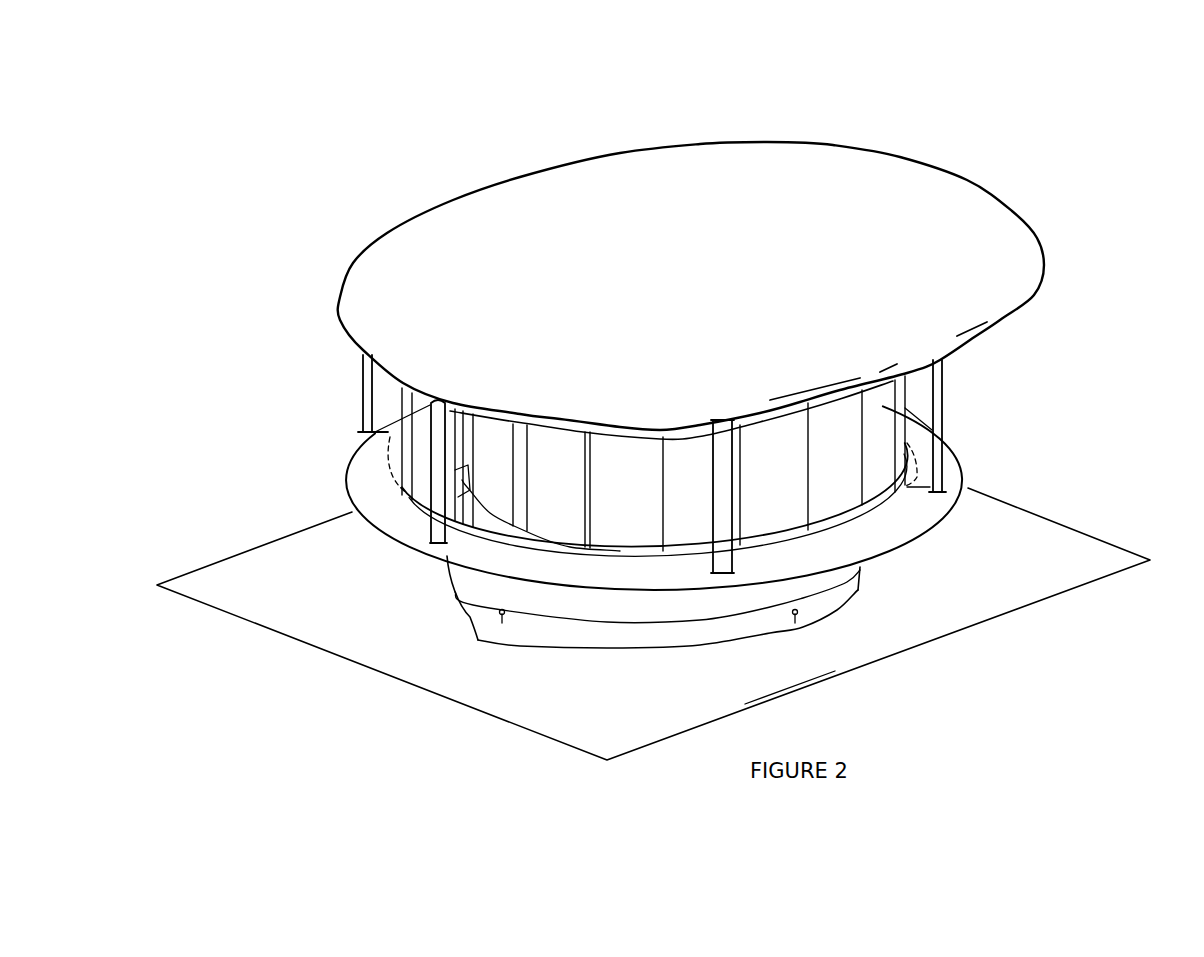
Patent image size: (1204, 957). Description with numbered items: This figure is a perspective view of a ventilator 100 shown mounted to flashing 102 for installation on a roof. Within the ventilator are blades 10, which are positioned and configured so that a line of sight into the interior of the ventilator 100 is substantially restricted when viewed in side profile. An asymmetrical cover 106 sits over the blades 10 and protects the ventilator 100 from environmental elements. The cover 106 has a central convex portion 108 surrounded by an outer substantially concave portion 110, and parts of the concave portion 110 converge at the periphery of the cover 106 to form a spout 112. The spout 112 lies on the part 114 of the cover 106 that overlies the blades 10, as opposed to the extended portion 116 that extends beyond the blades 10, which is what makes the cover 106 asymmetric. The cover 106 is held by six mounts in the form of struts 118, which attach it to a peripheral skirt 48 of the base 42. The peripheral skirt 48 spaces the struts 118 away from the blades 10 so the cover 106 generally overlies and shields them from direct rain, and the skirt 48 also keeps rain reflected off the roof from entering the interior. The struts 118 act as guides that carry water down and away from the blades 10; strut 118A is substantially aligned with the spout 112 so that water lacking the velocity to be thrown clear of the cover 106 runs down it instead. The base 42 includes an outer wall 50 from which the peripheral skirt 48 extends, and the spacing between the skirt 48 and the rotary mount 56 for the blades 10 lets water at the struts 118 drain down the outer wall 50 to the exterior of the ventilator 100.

The blades 10 is at (780, 495).
The base 42 is at (567, 627).
The peripheral skirt 48 is at (392, 517).
The outer wall 50 is at (633, 603).
The rotary mount 56 is at (477, 517).
The ventilator 100 is at (1120, 238).
The flashing 102 is at (1040, 573).
The cover 106 is at (913, 178).
The central convex portion 108 is at (680, 288).
The outer substantially concave portion 110 is at (500, 240).
The spout 112 is at (446, 388).
The part of the cover overlying the blades 114 is at (463, 178).
The extended portion 116 is at (797, 115).
The struts 118 is at (370, 390).
The strut 118A is at (447, 515).